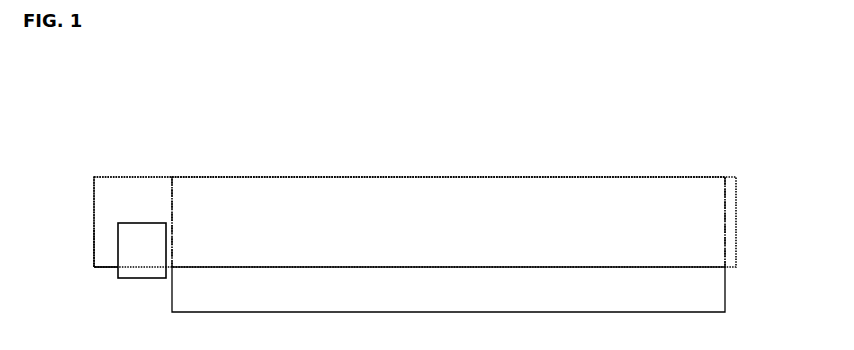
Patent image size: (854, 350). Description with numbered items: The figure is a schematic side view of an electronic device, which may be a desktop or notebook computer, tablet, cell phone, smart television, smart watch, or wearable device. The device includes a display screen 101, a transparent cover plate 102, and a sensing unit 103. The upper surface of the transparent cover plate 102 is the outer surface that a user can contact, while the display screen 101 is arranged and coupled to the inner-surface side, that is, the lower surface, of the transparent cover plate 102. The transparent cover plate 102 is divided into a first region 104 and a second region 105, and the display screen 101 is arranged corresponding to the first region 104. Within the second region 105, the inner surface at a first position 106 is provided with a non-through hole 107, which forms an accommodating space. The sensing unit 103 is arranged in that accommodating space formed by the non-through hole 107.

The display screen 101 is at (448, 265).
The transparent cover plate 102 is at (448, 194).
The sensing unit 103 is at (180, 234).
The first region 104 is at (448, 157).
The second region 105 is at (426, 194).
The first position 106 is at (167, 194).
The non-through hole 107 is at (71, 230).